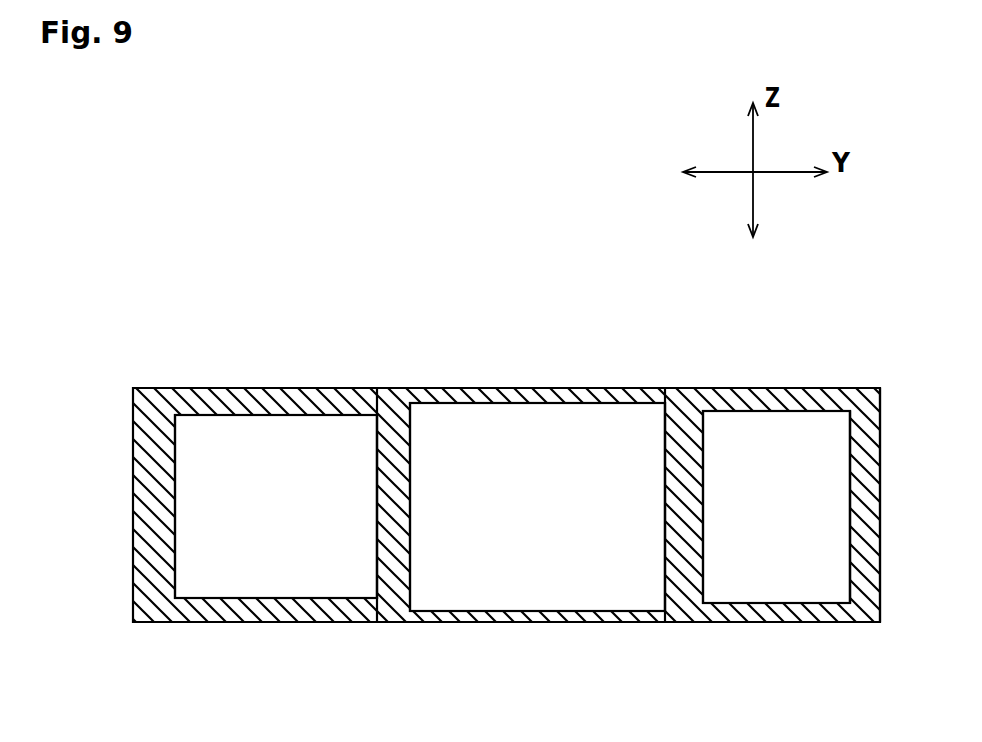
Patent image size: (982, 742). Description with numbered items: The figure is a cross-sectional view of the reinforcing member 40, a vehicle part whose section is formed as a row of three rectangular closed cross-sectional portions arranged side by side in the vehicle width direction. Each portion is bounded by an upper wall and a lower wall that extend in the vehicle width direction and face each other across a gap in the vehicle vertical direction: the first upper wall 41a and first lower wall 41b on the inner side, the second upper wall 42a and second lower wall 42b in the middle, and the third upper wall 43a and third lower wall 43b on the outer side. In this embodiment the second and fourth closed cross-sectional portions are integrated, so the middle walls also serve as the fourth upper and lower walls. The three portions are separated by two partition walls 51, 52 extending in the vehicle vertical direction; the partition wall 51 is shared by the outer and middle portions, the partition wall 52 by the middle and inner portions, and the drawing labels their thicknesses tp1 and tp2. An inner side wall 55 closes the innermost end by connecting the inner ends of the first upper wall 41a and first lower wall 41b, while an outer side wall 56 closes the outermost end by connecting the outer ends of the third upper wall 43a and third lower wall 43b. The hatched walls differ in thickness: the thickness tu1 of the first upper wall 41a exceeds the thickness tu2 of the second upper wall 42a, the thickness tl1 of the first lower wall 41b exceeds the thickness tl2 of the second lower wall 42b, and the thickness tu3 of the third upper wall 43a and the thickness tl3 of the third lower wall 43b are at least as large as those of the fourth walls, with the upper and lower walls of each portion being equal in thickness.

The reinforcing member 40 is at (178, 330).
The first upper wall 41a is at (808, 390).
The first lower wall 41b is at (827, 623).
The second upper wall 42a is at (610, 390).
The second lower wall 42b is at (618, 623).
The third upper wall 43a is at (305, 390).
The third lower wall 43b is at (312, 623).
The partition wall 51 is at (410, 568).
The partition wall 52 is at (703, 568).
The inner side wall 55 is at (849, 452).
The outer side wall 56 is at (175, 453).
The thickness of first upper wall tu1 is at (776, 375).
The thickness of second upper wall tu2 is at (537, 375).
The thickness of third upper wall tu3 is at (276, 375).
The thickness of first lower wall tl1 is at (776, 640).
The thickness of second lower wall tl2 is at (537, 640).
The thickness of third lower wall tl3 is at (276, 628).
The partition wall thickness 1 tp1 is at (426, 505).
The partition wall thickness 2 tp2 is at (715, 505).